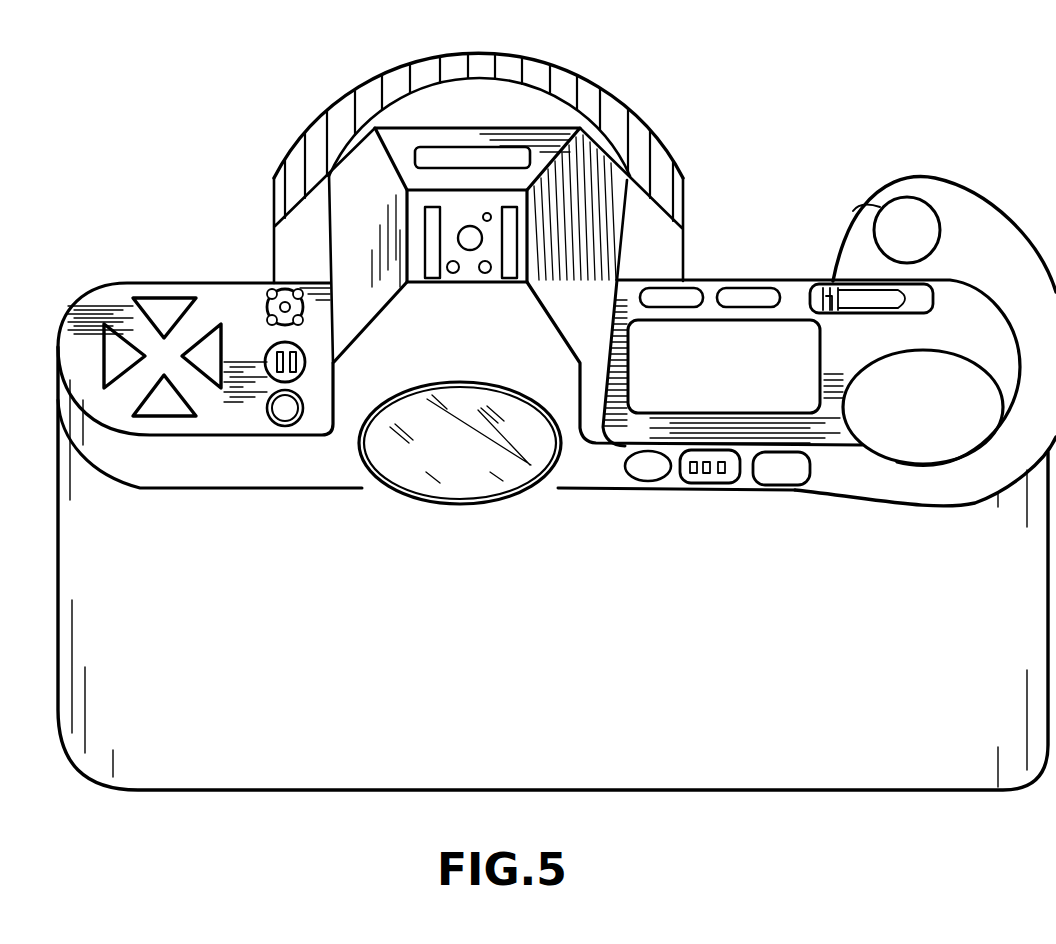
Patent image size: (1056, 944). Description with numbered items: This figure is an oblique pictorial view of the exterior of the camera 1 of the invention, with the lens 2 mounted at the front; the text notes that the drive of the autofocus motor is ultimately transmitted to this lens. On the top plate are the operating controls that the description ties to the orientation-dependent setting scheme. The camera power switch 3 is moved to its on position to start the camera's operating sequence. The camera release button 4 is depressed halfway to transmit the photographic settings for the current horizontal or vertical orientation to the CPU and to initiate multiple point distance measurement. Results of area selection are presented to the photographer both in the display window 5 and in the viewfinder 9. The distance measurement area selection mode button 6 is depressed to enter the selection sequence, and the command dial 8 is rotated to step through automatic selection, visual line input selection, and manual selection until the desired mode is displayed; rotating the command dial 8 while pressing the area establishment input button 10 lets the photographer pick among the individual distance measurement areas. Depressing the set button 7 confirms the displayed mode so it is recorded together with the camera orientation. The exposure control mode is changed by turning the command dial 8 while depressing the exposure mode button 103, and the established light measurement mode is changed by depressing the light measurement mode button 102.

The camera body 1 is at (358, 784).
The lens barrel 2 is at (490, 52).
The camera power switch 3 is at (830, 281).
The camera release button 4 is at (856, 211).
The display window 5 is at (633, 443).
The distance measurement area selection mode button 6 is at (267, 351).
The set button 7 is at (792, 490).
The command dial 8 is at (917, 470).
The viewfinder 9 is at (460, 485).
The area establishment input button 10 is at (715, 490).
The light measurement mode button 102 is at (256, 284).
The exposure mode button 103 is at (130, 297).